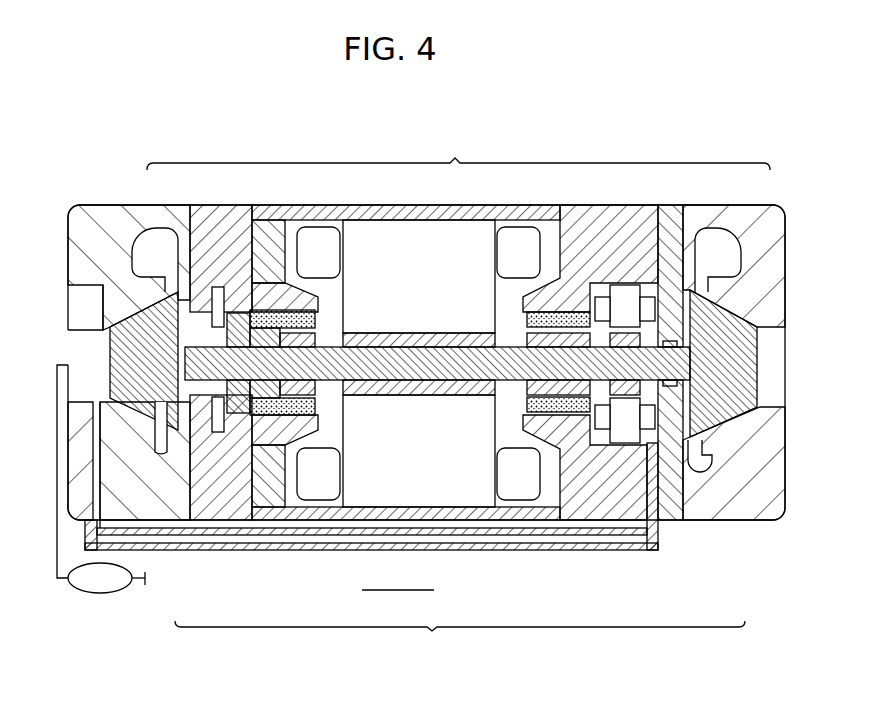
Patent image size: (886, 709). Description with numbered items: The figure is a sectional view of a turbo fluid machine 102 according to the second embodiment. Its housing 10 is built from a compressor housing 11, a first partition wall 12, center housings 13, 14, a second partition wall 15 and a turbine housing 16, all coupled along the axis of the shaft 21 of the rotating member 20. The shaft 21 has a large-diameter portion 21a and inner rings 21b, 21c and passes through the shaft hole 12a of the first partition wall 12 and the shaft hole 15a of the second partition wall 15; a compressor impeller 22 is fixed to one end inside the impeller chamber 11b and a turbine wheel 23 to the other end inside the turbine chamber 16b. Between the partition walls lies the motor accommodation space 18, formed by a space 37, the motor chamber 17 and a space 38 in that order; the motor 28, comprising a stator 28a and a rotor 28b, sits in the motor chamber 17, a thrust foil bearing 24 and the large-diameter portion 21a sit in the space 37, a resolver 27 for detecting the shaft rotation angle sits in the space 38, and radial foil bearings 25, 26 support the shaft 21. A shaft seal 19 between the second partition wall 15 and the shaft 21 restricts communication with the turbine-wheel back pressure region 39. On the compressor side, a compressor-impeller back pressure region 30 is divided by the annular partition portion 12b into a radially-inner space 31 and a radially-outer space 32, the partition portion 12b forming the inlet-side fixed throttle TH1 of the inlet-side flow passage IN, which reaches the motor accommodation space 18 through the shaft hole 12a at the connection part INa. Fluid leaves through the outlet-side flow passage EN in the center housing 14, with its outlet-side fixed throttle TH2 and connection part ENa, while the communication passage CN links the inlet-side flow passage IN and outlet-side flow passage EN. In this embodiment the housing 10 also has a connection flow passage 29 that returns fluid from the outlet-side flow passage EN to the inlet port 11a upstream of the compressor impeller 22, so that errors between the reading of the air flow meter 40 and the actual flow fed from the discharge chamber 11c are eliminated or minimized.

The turbo fluid machine 102 is at (118, 190).
The housing 10 is at (458, 153).
The rotating member 20 is at (460, 636).
The compressor housing 11 is at (150, 215).
The inlet port 11a is at (144, 361).
The impeller chamber 11b is at (131, 413).
The discharge chamber 11c is at (140, 255).
The first partition wall 12 is at (225, 230).
The shaft hole 12a is at (212, 348).
The partition portion 12b is at (183, 312).
The center housing 13 is at (432, 207).
The center housing 14 is at (608, 225).
The second partition wall 15 is at (672, 233).
The shaft hole 15a is at (667, 378).
The turbine housing 16 is at (757, 237).
The turbine chamber 16b is at (728, 307).
The motor chamber 17 is at (378, 225).
The motor accommodation space 18 is at (327, 247).
The shaft seal 19 is at (700, 383).
The shaft 21 is at (462, 363).
The large-diameter portion 21a is at (307, 357).
The inner ring 21b is at (288, 352).
The inner ring 21c is at (552, 347).
The compressor impeller 22 is at (158, 410).
The turbine wheel 23 is at (740, 403).
The thrust foil bearing 24 is at (220, 413).
The radial foil bearing 25 is at (263, 415).
The radial foil bearing 26 is at (572, 322).
The resolver 27 is at (628, 306).
The motor 28 is at (398, 602).
The stator 28a is at (380, 478).
The rotor 28b is at (400, 390).
The connection flow passage 29 is at (551, 533).
The compressor-impeller back pressure region 30 is at (102, 314).
The radially-inner space 31 is at (180, 347).
The radially-outer space 32 is at (172, 293).
The space 37 is at (240, 428).
The space 38 is at (697, 365).
The turbine-wheel back pressure region 39 is at (693, 341).
The air flow meter 40 is at (103, 594).
The inlet-side flow passage IN is at (182, 348).
The connection part INa is at (223, 384).
The outlet-side flow passage EN is at (655, 500).
The connection part ENa is at (640, 437).
The inlet-side fixed throttle TH1 is at (149, 320).
The outlet-side fixed throttle TH2 is at (657, 443).
The communication passage CN is at (433, 390).